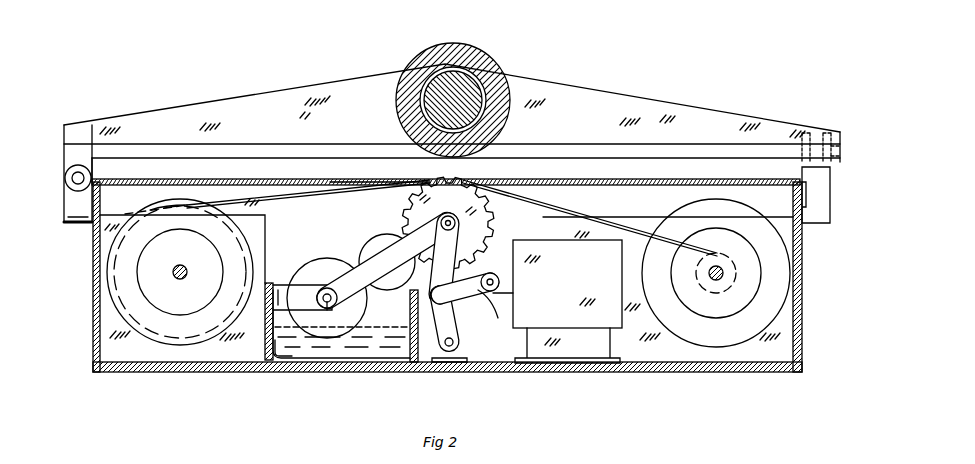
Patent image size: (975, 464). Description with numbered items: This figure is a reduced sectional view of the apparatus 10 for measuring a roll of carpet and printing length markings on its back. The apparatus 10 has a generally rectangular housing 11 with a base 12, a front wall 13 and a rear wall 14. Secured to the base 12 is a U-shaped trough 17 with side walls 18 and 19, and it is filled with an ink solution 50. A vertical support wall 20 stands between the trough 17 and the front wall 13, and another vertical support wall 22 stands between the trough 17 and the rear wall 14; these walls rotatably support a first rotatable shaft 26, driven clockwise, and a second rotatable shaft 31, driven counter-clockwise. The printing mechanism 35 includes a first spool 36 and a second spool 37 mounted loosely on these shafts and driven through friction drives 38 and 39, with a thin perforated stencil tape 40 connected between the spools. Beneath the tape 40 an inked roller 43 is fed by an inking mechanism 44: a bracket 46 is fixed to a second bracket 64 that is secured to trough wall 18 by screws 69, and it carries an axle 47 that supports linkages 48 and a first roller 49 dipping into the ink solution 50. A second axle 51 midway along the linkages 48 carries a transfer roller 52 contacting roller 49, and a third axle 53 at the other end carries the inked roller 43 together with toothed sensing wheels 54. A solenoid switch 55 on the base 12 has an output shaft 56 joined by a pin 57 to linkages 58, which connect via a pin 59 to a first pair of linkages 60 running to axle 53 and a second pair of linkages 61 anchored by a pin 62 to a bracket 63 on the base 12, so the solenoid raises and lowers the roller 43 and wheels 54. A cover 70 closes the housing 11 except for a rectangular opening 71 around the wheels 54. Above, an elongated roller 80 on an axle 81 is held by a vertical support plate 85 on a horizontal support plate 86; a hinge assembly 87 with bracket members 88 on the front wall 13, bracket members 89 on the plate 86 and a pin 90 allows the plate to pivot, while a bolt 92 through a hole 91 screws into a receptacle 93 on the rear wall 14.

The apparatus 10 is at (613, 52).
The housing 11 is at (703, 374).
The base 12 is at (560, 369).
The front wall 13 is at (93, 313).
The rear wall 14 is at (803, 270).
The U-shaped trough 17 is at (325, 369).
The side wall of trough 18 is at (263, 352).
The side wall of trough 19 is at (410, 346).
The vertical support wall 20 is at (258, 216).
The vertical support wall 22 is at (645, 218).
The first rotatable shaft 26 is at (712, 280).
The second rotatable shaft 31 is at (186, 268).
The first printing mechanism 35 is at (605, 197).
The first spool 36 is at (735, 213).
The second spool 37 is at (150, 210).
The first pair of friction drives 38 is at (713, 238).
The second pair of friction drives 39 is at (176, 299).
The tape 40 is at (247, 200).
The inked roller 43 is at (408, 219).
The inking mechanism 44 is at (362, 224).
The bracket 46 is at (290, 283).
The axle 47 is at (325, 308).
The linkages 48 is at (365, 261).
The first roller 49 is at (298, 262).
The ink solution 50 is at (370, 331).
The second axle 51 is at (386, 258).
The transfer roller 52 is at (396, 289).
The third axle 53 is at (456, 224).
The toothed sensing wheels 54 is at (466, 185).
The solenoid switch 55 is at (554, 269).
The output shaft 56 is at (492, 310).
The pin 57 is at (493, 274).
The linkages 58 is at (458, 298).
The pin 59 is at (441, 281).
The first pair of linkages 60 is at (436, 258).
The second pair of linkages 61 is at (436, 326).
The pin 62 is at (448, 347).
The bracket 63 is at (457, 364).
The second bracket 64 is at (268, 313).
The screws 69 is at (283, 300).
The cover 70 is at (187, 181).
The rectangular opening 71 is at (382, 181).
The elongated roller 80 is at (488, 60).
The axle 81 is at (475, 88).
The vertical support plate 85 is at (272, 100).
The horizontal support plate 86 is at (643, 151).
The hinge assembly 87 is at (62, 200).
The bracket members 88 is at (80, 214).
The bracket members 89 is at (68, 166).
The pin 90 is at (66, 178).
The hole 91 is at (842, 152).
The bolt 92 is at (822, 136).
The receptacle 93 is at (832, 211).